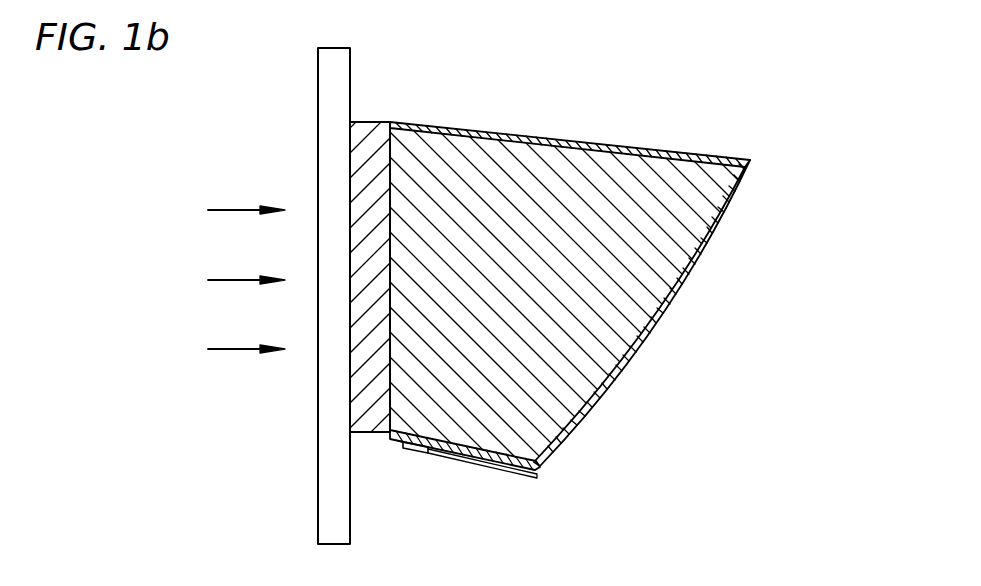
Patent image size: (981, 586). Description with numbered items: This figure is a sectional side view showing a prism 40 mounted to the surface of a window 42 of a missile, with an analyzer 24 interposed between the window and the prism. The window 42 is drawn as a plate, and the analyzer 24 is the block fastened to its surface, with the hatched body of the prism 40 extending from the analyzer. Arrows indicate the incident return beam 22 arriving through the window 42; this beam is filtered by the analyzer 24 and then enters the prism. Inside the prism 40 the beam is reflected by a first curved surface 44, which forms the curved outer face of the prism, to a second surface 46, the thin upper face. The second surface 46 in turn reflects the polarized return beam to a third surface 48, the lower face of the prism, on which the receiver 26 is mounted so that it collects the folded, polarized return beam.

The prism 40 is at (692, 104).
The window 42 is at (318, 77).
The analyzer 24 is at (368, 122).
The second surface 46 is at (548, 136).
The first curved surface 44 is at (656, 325).
The third surface 48 is at (470, 462).
The receiver 26 is at (410, 452).
The incident return beam 22 is at (230, 280).